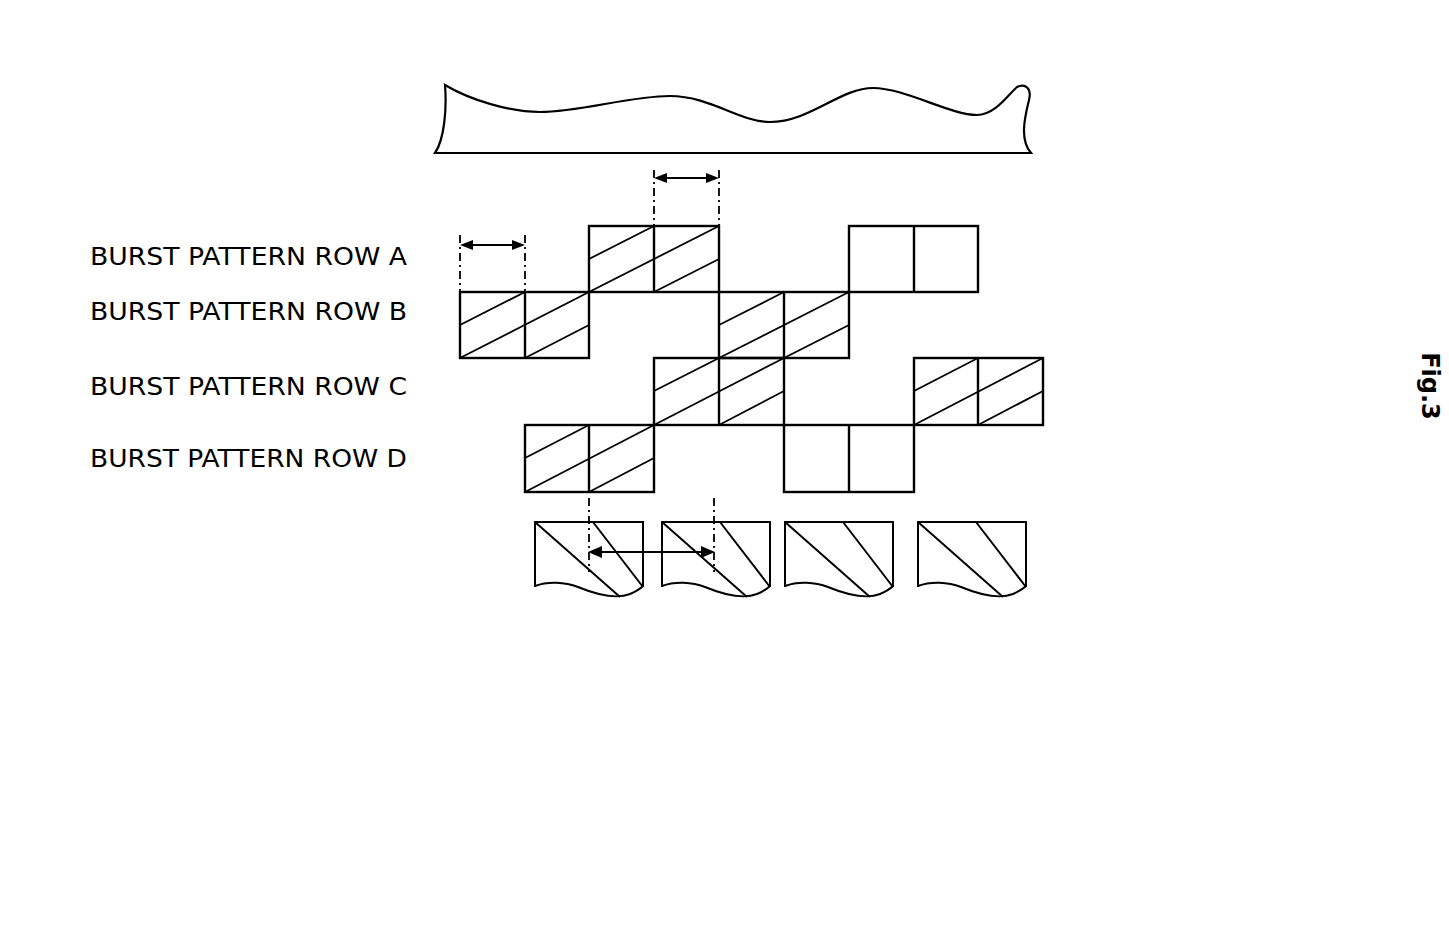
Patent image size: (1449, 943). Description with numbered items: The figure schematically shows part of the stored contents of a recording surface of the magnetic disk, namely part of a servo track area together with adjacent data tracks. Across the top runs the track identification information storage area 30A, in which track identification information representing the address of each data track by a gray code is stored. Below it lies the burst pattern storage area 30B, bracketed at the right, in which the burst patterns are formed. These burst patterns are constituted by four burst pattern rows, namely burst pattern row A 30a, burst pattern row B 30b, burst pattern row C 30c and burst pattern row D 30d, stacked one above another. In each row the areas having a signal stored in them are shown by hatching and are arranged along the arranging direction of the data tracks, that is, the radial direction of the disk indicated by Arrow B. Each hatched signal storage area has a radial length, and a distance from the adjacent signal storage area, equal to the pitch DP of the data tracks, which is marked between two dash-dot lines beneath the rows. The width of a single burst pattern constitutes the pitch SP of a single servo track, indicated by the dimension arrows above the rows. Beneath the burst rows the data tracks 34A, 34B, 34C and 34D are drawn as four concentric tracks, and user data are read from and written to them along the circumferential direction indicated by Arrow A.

The track identification information storage area 30A is at (866, 120).
The burst pattern storage area 30B is at (1130, 222).
The burst pattern row A 30a is at (719, 257).
The burst pattern row B 30b is at (590, 340).
The burst pattern row C 30c is at (654, 390).
The burst pattern row D 30d is at (654, 458).
The data track 34A is at (550, 585).
The data track 34B is at (687, 585).
The data track 34C is at (813, 585).
The data track 34D is at (943, 585).
The pitch of a single servo track SP is at (492, 244).
The pitch of the data tracks DP is at (650, 553).
The Arrow A (circumferential direction) A is at (1064, 340).
The Arrow B (radial direction) B is at (575, 52).